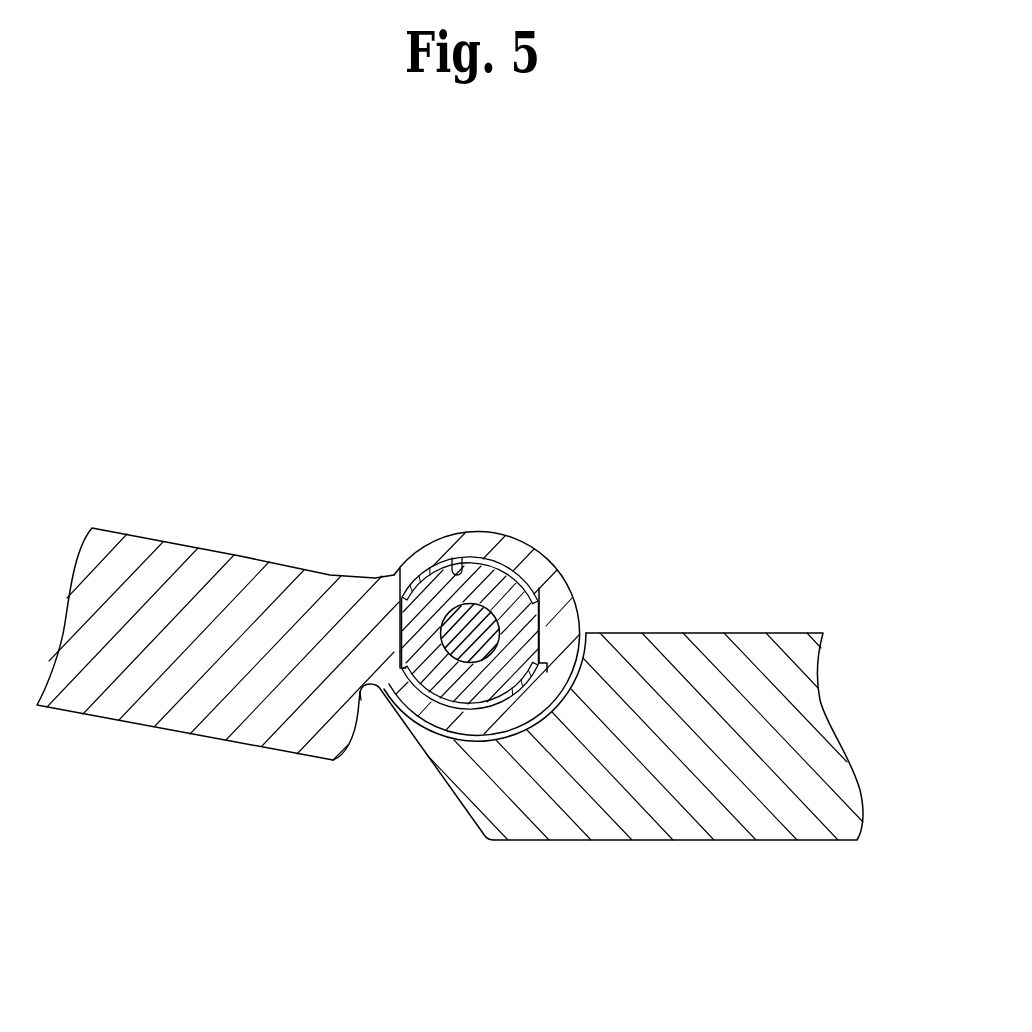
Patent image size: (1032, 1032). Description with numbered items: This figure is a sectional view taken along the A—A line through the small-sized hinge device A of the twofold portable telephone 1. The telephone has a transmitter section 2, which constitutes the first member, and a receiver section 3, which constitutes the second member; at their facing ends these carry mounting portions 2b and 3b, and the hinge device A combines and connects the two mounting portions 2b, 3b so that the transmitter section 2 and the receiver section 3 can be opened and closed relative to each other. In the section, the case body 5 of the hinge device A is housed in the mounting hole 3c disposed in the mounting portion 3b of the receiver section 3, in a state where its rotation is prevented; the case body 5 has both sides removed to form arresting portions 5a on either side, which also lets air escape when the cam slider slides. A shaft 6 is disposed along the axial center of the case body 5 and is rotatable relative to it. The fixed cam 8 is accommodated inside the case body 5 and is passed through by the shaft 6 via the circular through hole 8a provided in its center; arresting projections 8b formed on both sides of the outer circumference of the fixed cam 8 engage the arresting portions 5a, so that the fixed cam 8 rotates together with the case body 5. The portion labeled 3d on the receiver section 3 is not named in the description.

The twofold portable telephone 1 is at (577, 858).
The transmitter section 2 is at (775, 828).
The mounting portion 2b is at (403, 758).
The receiver section 3 is at (175, 552).
The mounting portion 3b is at (493, 543).
The mounting hole 3c is at (462, 557).
The step face 3d is at (284, 753).
The case body 5 is at (434, 563).
The arresting portions 5a is at (398, 572).
The shaft 6 is at (383, 757).
The fixed cam 8 is at (461, 637).
The through hole 8a is at (483, 644).
The arresting projections 8b is at (400, 631).
The small-sized hinge device A is at (539, 571).